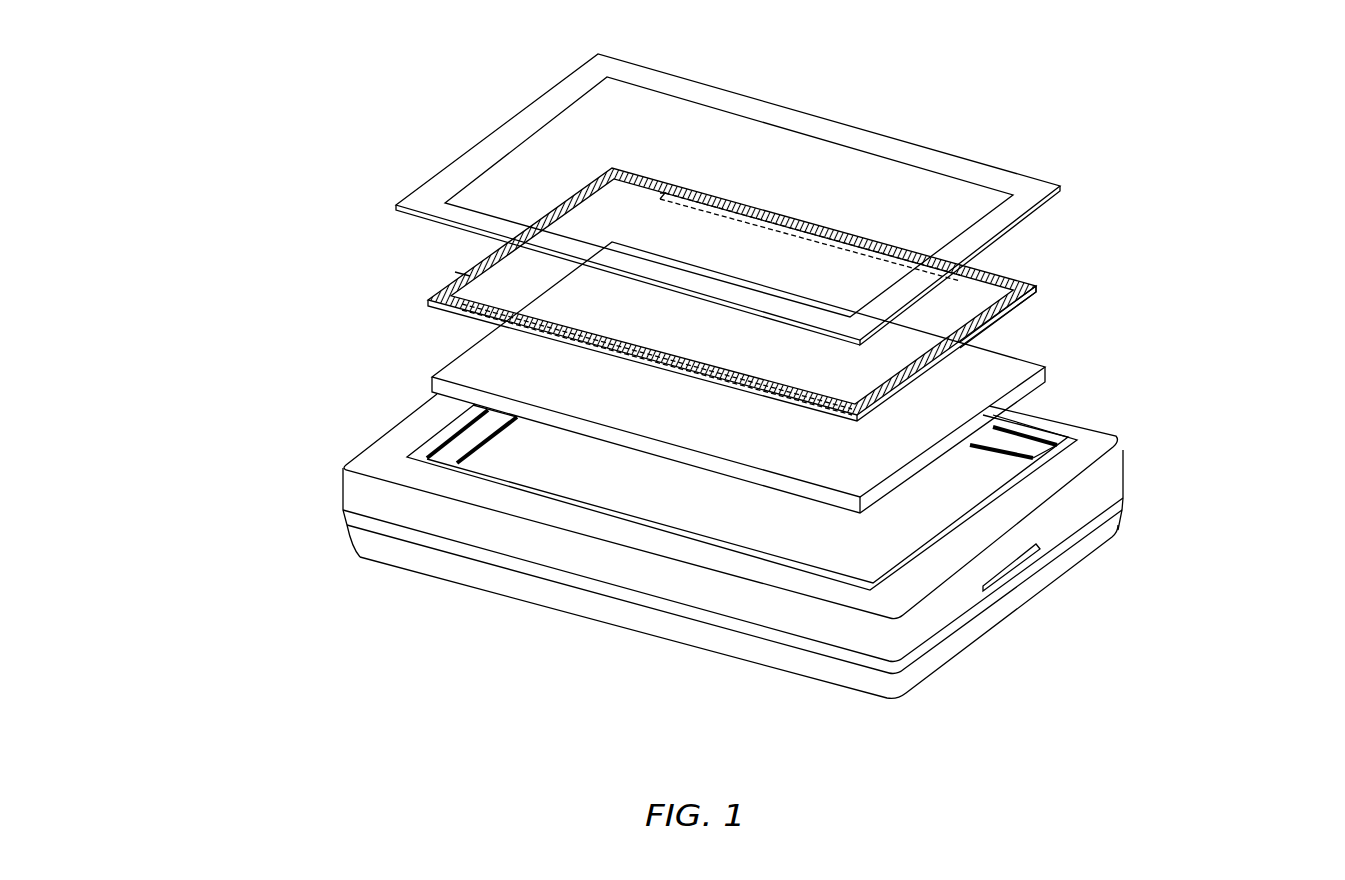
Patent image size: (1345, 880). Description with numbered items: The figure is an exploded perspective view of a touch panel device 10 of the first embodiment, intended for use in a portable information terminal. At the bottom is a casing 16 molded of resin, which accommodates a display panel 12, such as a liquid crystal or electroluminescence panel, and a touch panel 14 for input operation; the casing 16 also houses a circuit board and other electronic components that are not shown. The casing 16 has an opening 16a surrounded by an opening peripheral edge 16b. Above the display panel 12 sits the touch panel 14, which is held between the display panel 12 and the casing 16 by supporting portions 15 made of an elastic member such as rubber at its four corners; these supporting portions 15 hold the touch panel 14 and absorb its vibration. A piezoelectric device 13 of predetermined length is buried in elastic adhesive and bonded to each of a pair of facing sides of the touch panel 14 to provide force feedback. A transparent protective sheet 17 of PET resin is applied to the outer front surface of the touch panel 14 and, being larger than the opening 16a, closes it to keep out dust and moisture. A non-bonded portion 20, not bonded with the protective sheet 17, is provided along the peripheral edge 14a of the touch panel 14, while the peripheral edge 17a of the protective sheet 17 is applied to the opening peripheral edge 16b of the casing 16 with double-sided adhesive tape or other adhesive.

The touch panel device 10 is at (826, 88).
The display panel 12 is at (1025, 366).
The piezoelectric device 13 is at (797, 212).
The touch panel 14 is at (1003, 272).
The peripheral edge 14a is at (1022, 280).
The supporting portion 15 is at (427, 304).
The casing 16 is at (1090, 438).
The opening 16a is at (540, 485).
The opening peripheral edge 16b is at (437, 443).
The protective sheet 17 is at (783, 46).
The peripheral edge 17a is at (417, 217).
The non-bonded portion 20 is at (457, 269).